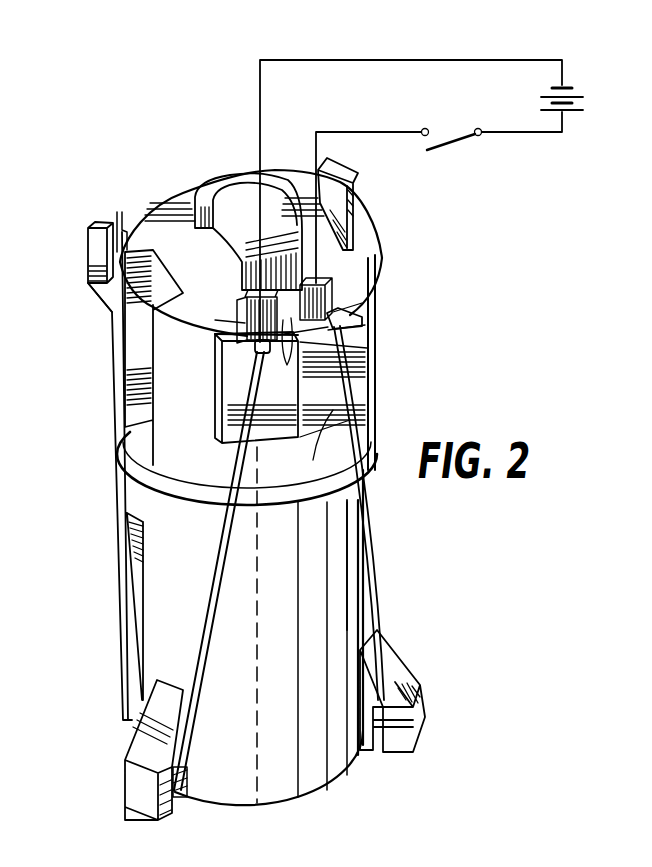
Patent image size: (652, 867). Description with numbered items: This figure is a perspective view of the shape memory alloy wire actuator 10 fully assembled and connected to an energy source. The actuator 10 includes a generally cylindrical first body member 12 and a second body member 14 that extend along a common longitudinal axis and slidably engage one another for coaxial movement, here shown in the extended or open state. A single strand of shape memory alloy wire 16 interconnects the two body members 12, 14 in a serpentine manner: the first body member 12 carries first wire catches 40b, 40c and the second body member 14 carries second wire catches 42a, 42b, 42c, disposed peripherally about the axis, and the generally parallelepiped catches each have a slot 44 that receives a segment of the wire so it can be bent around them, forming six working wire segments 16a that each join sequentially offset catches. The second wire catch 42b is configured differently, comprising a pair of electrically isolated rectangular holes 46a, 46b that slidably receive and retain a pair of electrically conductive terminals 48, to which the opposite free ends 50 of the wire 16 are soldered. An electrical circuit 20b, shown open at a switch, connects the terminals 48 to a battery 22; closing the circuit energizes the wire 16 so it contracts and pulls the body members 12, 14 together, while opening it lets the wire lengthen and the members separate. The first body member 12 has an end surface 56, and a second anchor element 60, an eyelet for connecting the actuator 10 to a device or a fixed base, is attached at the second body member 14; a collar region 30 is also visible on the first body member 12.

The shape memory alloy wire actuator 10 is at (446, 586).
The first body member 12 is at (298, 806).
The second body member 14 is at (390, 310).
The shape memory alloy wire 16 is at (216, 667).
The working shape memory alloy wire segment 16a is at (122, 549).
The electrical circuit 20b is at (473, 60).
The battery 22 is at (579, 92).
The collar 30 is at (121, 480).
The first wire catch 40b is at (142, 798).
The first wire catch 40c is at (428, 716).
The second wire catch 42a is at (88, 243).
The second wire catch 42b is at (276, 432).
The second wire catch 42c is at (358, 168).
The slot 44 is at (119, 240).
The rectangular hole 46a is at (216, 328).
The rectangular hole 46b is at (373, 290).
The electrically conductive terminal 48 is at (287, 366).
The free end 50 is at (254, 350).
The end surface 56 is at (186, 190).
The second anchor element 60 is at (246, 170).